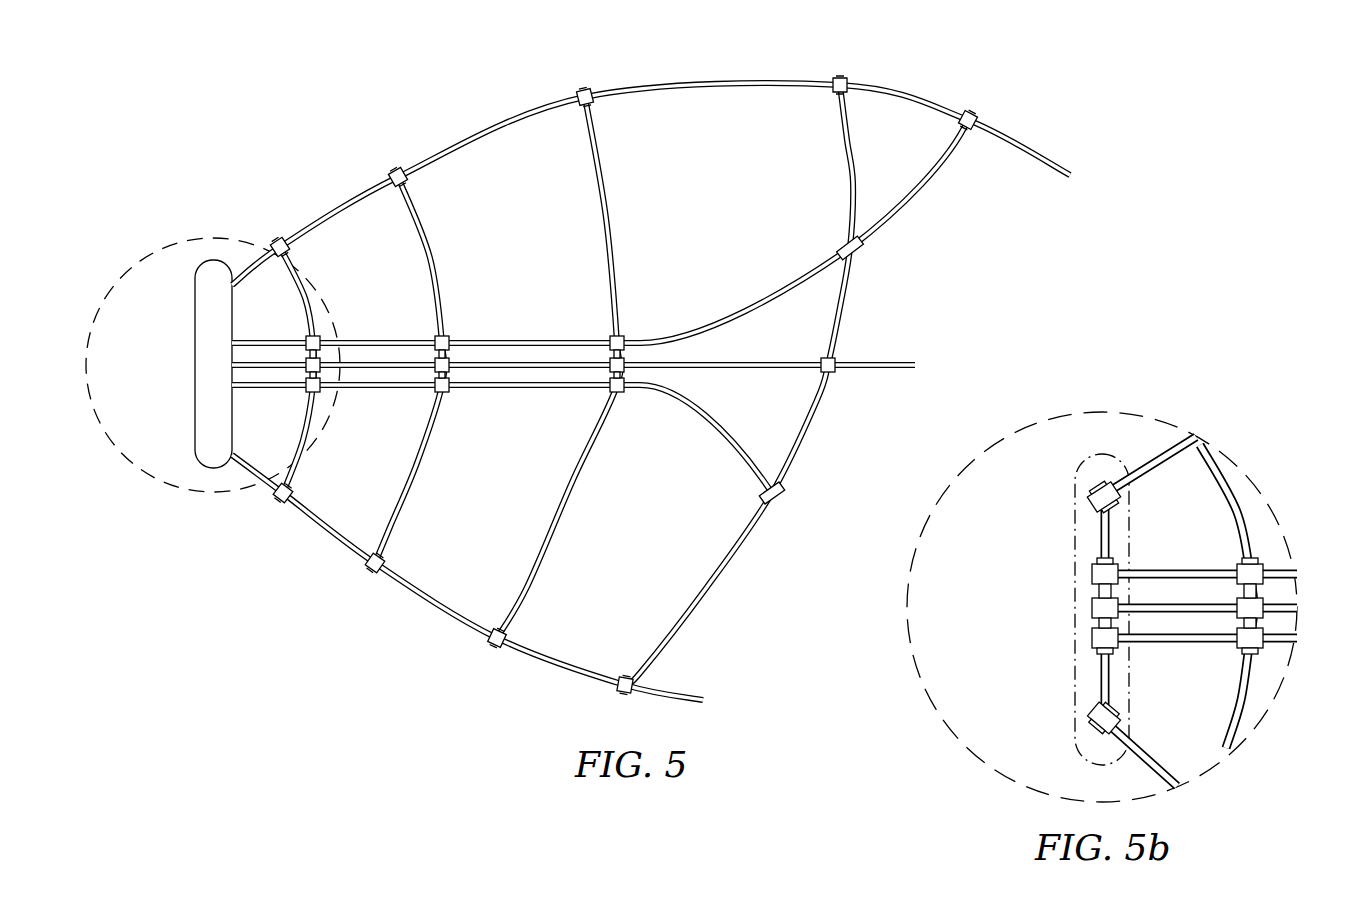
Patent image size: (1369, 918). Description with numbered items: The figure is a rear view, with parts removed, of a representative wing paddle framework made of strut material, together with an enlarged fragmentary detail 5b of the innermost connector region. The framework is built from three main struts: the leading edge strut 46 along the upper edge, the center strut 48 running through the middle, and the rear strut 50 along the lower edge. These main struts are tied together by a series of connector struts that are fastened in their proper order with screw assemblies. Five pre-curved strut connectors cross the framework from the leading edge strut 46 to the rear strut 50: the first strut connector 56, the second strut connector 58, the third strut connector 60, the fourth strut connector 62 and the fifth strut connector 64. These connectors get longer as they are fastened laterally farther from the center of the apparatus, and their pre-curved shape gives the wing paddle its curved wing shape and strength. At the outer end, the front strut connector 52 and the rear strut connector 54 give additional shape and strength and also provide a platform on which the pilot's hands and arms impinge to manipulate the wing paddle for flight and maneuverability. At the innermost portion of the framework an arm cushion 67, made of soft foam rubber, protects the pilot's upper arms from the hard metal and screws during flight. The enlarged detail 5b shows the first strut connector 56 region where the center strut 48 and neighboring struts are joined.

In FIG. 5, the leading edge strut 46 is at (1073, 179).
In FIG. 5, the center strut 48 is at (918, 365).
In FIG. 5, the rear strut 50 is at (706, 700).
In FIG. 5, the front strut connector 52 is at (971, 112).
In FIG. 5, the rear strut connector 54 is at (775, 503).
In FIG. 5B, the first strut connector 56 is at (1098, 539).
In FIG. 5, the second strut connector 58 is at (281, 238).
In FIG. 5, the third strut connector 60 is at (397, 168).
In FIG. 5, the fourth strut connector 62 is at (578, 90).
In FIG. 5, the fifth strut connector 64 is at (846, 78).
In FIG. 5, the arm cushion 67 is at (194, 320).
In FIG. 5, the detail callout circle 5b is at (212, 237).